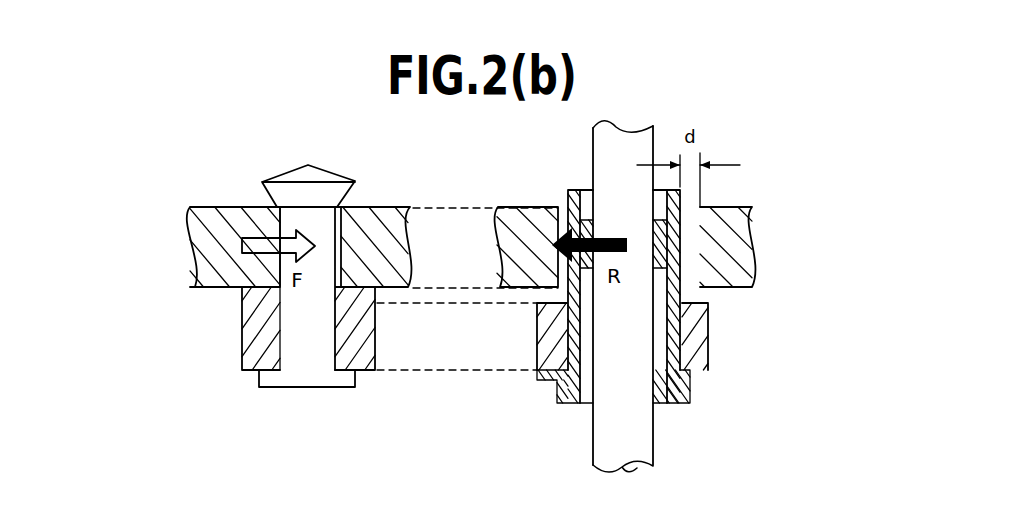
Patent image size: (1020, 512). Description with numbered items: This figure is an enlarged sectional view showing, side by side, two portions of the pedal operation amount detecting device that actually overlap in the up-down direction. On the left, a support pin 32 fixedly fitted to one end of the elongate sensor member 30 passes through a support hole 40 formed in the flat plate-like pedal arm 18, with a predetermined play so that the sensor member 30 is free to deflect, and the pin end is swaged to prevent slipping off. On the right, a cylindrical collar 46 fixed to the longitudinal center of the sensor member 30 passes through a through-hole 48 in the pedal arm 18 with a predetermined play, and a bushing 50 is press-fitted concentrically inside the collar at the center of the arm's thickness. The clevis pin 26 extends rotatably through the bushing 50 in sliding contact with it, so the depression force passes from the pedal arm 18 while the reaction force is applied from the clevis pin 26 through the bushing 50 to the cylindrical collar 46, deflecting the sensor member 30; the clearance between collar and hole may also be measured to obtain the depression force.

The pedal arm 18 is at (220, 252).
The clevis pin 26 is at (627, 148).
The sensor member 30 is at (262, 328).
The support pin 32 is at (307, 355).
The support hole 40 is at (336, 232).
The cylindrical collar 46 is at (672, 342).
The through-hole 48 is at (706, 256).
The bushing 50 is at (662, 243).